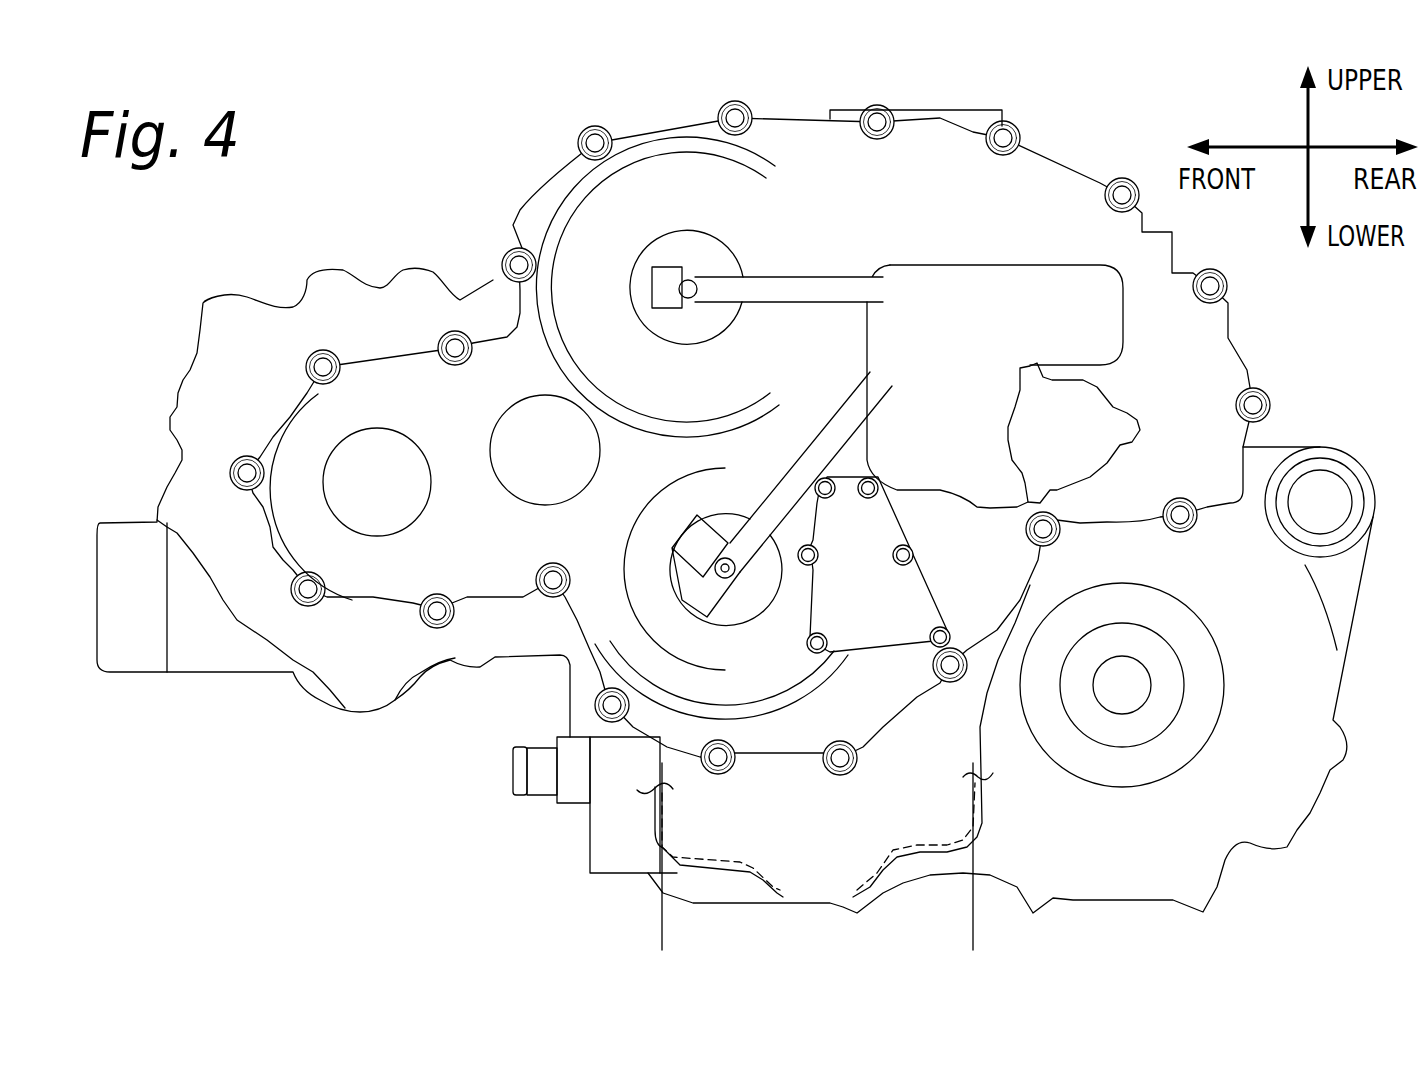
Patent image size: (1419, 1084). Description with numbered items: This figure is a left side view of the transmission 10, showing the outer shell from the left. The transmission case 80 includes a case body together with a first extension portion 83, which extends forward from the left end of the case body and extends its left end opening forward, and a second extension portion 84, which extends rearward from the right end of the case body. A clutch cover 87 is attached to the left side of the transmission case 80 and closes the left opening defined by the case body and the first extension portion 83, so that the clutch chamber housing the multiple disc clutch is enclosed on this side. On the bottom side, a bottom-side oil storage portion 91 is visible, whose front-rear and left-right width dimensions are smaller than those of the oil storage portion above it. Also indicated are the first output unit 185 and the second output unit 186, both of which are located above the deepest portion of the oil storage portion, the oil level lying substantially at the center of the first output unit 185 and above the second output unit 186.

The transmission 10 is at (525, 184).
The transmission case 80 is at (940, 106).
The first extension portion 83 is at (227, 335).
The second extension portion 84 is at (1262, 858).
The clutch cover 87 is at (780, 145).
The bottom-side oil storage portion 91 is at (973, 942).
The first output unit 185 is at (1147, 663).
The second output unit 186 is at (540, 800).